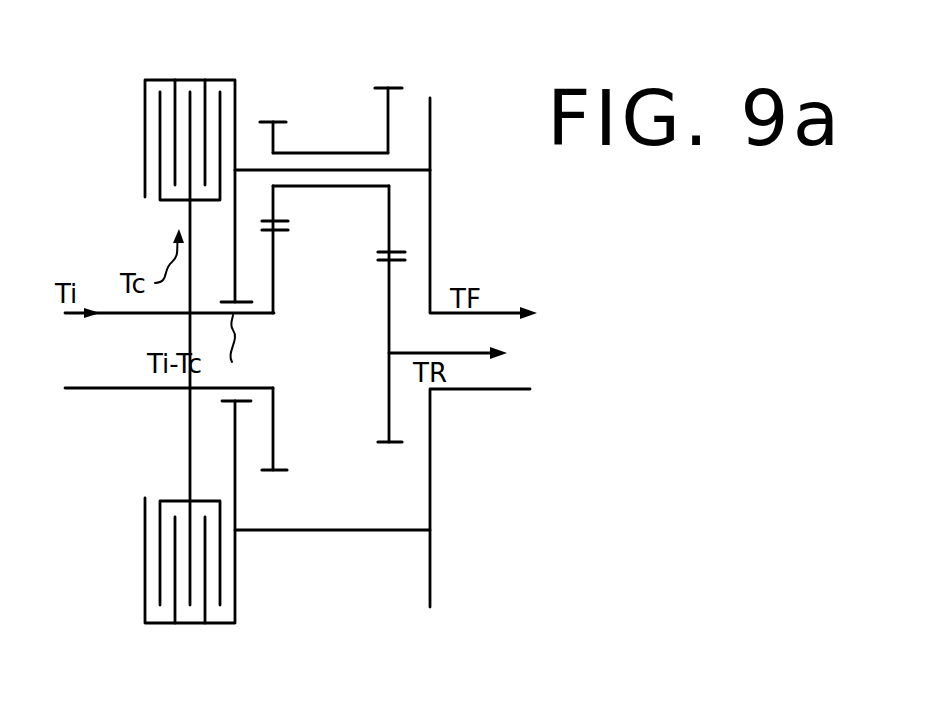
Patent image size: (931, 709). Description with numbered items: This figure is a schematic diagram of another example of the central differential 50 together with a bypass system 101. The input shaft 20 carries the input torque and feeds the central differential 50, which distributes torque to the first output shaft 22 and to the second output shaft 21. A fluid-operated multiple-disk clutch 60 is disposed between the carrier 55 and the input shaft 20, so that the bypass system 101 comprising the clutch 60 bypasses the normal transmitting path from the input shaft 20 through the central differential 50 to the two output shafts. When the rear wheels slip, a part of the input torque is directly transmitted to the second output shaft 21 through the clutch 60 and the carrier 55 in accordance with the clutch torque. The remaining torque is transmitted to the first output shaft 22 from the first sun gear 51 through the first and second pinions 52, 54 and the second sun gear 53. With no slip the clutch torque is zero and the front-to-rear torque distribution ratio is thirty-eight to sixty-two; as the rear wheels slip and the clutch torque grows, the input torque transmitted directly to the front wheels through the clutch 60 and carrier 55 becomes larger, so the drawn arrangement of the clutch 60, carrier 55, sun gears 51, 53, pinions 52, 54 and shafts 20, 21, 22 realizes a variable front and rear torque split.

The bypass system 101 is at (140, 222).
The fluid-operated multiple-disk clutch 60 is at (203, 633).
The central differential 50 is at (338, 55).
The first sun gear 51 is at (274, 437).
The first pinion 52 is at (282, 120).
The second sun gear 53 is at (382, 445).
The second pinion 54 is at (393, 88).
The carrier 55 is at (327, 533).
The input shaft 20 is at (100, 390).
The second output shaft 21 is at (502, 312).
The first output shaft 22 is at (468, 356).